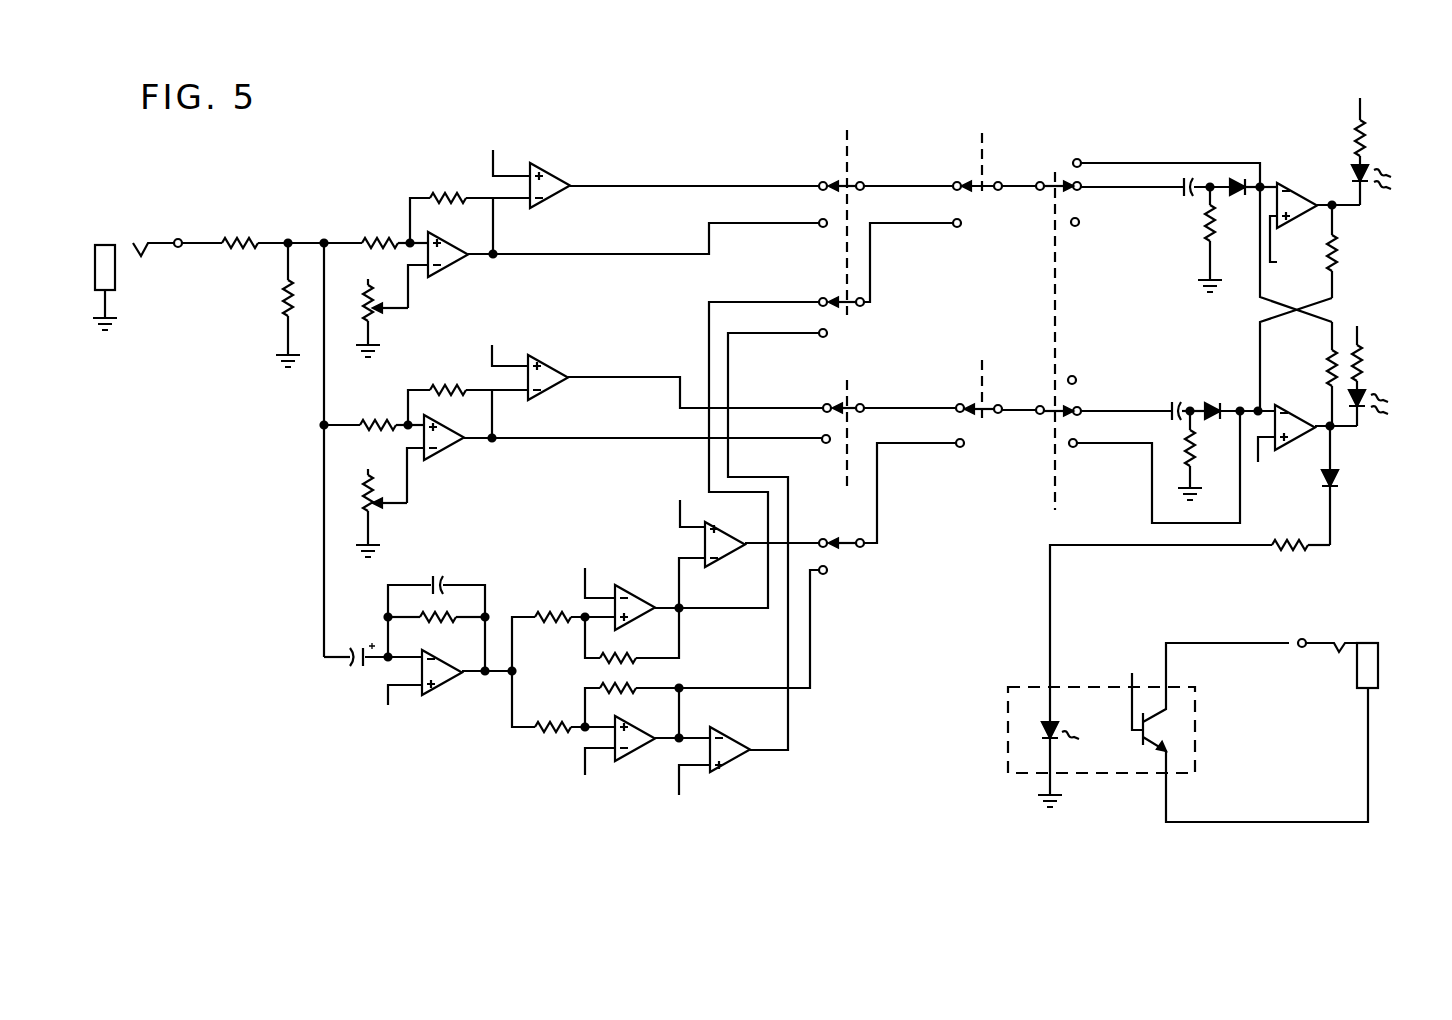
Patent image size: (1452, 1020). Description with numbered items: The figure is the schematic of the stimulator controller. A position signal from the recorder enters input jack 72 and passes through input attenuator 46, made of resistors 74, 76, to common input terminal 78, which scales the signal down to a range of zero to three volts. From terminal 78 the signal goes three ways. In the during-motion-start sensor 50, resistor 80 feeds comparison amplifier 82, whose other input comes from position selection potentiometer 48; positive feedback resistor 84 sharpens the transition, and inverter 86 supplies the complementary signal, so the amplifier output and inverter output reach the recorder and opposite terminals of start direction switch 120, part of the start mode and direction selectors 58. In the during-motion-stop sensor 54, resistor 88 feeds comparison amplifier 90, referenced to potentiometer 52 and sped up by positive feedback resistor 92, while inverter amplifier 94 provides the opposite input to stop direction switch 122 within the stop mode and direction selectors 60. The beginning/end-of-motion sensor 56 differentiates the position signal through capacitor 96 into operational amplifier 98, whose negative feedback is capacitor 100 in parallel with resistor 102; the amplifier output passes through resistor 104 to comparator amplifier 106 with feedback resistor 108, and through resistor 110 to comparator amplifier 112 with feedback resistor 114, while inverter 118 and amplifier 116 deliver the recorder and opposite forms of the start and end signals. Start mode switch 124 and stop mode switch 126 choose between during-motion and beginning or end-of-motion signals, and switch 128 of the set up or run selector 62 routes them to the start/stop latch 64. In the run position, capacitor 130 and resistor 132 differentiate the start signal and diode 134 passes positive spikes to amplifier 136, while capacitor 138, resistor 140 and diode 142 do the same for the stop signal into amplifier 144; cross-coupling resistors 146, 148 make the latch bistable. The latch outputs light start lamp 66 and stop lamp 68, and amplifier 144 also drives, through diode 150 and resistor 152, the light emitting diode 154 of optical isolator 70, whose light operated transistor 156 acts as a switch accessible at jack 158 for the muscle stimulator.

The input attenuator 46 is at (220, 300).
The position selection potentiometer 48 is at (376, 308).
The during-motion-start sensor 50 is at (453, 230).
The position selection potentiometer 52 is at (370, 526).
The during-motion-stop sensor 54 is at (451, 412).
The beginning/end-of-motion sensor 56 is at (506, 598).
The start mode and direction selectors 58 is at (872, 214).
The stop mode and direction selectors 60 is at (922, 436).
The set up or run selector 62 is at (1083, 326).
The start/stop latch 64 is at (1278, 340).
The start lamp 66 is at (1392, 174).
The stop lamp 68 is at (1372, 394).
The optical isolator 70 is at (1125, 777).
The input jack 72 is at (137, 273).
The resistor 74 is at (243, 238).
The resistor 76 is at (283, 302).
The common input terminal 78 is at (322, 238).
The resistor 80 is at (382, 238).
The comparison amplifier 82 is at (440, 267).
The positive feedback resistor 84 is at (450, 194).
The inverter 86 is at (548, 175).
The resistor 88 is at (377, 419).
The comparison amplifier 90 is at (437, 452).
The positive feedback resistor 92 is at (452, 385).
The inverter amplifier 94 is at (545, 362).
The capacitor 96 is at (351, 670).
The operational amplifier 98 is at (433, 689).
The capacitor 100 is at (436, 575).
The resistor 102 is at (434, 625).
The resistor 104 is at (548, 622).
The comparator amplifier 106 is at (632, 584).
The resistor 108 is at (618, 653).
The resistor 110 is at (552, 731).
The comparator amplifier 112 is at (632, 752).
The resistor 114 is at (638, 690).
The amplifier 116 is at (723, 560).
The inverter 118 is at (736, 763).
The start direction switch 120 is at (847, 165).
The stop direction switch 122 is at (847, 470).
The start mode switch 124 is at (986, 166).
The stop mode switch 126 is at (984, 400).
The switch 128 is at (1055, 272).
The capacitor 130 is at (1192, 198).
The resistor 132 is at (1206, 250).
The diode 134 is at (1237, 177).
The amplifier 136 is at (1296, 184).
The capacitor 138 is at (1179, 397).
The resistor 140 is at (1186, 458).
The diode 142 is at (1213, 422).
The amplifier 144 is at (1291, 441).
The cross-coupling resistor 146 is at (1342, 256).
The cross-coupling resistor 148 is at (1322, 368).
The diode 150 is at (1343, 478).
The resistor 152 is at (1286, 552).
The light emitting diode 154 is at (1040, 730).
The light operated transistor 156 is at (1160, 728).
The jack 158 is at (1338, 663).